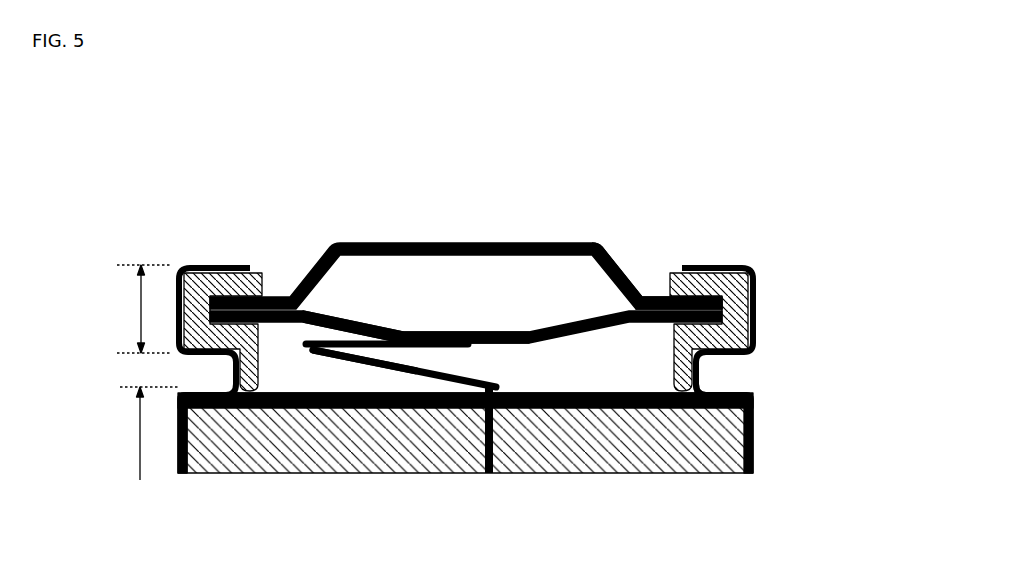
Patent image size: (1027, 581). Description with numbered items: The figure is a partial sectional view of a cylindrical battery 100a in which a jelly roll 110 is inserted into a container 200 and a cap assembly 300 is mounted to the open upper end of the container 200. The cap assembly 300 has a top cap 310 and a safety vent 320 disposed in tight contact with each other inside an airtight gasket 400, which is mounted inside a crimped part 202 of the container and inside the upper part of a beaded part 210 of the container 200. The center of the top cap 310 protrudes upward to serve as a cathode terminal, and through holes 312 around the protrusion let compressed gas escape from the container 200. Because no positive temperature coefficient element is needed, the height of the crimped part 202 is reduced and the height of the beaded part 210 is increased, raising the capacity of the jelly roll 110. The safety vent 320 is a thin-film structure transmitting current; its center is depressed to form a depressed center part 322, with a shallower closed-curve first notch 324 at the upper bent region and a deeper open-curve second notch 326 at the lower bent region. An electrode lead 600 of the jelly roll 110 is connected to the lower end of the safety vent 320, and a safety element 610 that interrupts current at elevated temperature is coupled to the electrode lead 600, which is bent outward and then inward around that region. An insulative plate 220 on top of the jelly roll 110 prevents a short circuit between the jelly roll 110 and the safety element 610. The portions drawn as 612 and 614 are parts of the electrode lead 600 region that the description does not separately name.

The cylindrical battery 100a is at (85, 131).
The jelly roll 110 is at (519, 455).
The container 200 is at (760, 456).
The crimped part 202 is at (764, 280).
The beaded part 210 is at (736, 385).
The insulative plate 220 is at (242, 402).
The cap assembly 300 is at (812, 223).
The top cap 310 is at (533, 238).
The through holes 312 is at (590, 243).
The safety vent 320 is at (334, 308).
The depressed center part 322 is at (427, 330).
The first notch 324 is at (651, 290).
The second notch 326 is at (400, 330).
The airtight gasket 400 is at (252, 262).
The electrode lead 600 is at (445, 384).
The safety element 610 is at (377, 362).
The vertical portion of electrode tab 612 is at (488, 383).
The first portion of electrode tab 614 is at (325, 355).